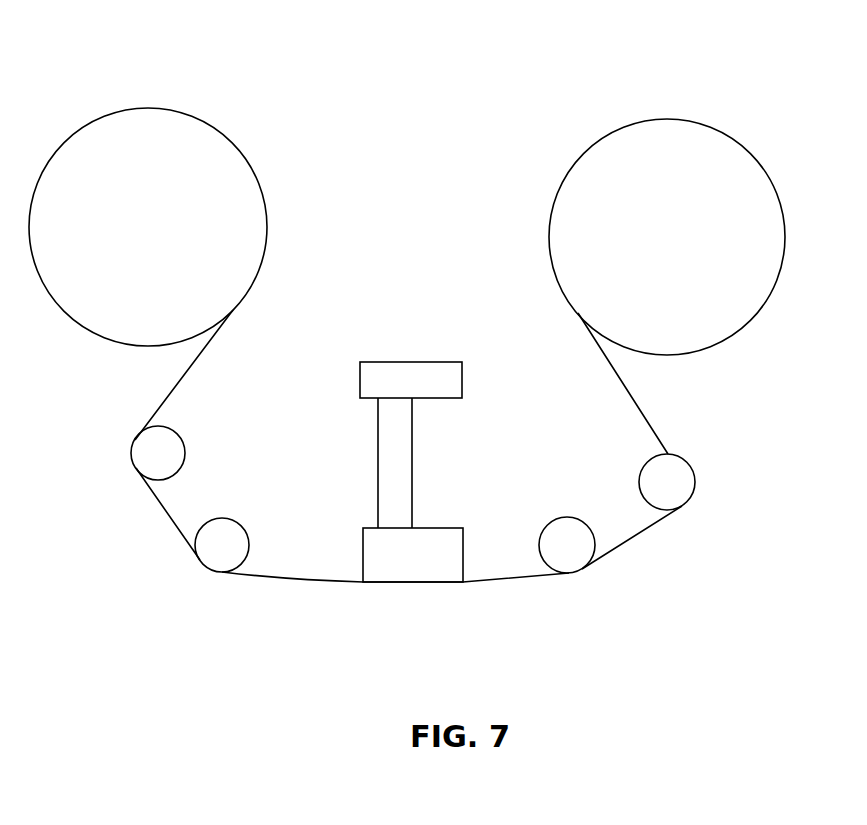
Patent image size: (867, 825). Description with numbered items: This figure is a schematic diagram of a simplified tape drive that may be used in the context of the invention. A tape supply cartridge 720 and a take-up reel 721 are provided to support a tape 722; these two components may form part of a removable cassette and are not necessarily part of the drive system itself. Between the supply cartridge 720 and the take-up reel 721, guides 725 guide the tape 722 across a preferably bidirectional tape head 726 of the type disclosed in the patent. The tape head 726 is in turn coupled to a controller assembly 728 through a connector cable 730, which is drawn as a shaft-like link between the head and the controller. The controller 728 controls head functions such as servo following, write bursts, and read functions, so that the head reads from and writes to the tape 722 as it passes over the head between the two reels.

The tape supply cartridge 720 is at (147, 108).
The take-up reel 721 is at (668, 117).
The tape 722 is at (293, 580).
The guides 725 is at (185, 453).
The tape head 726 is at (463, 552).
The controller assembly 728 is at (410, 361).
The connector cable 730 is at (380, 500).